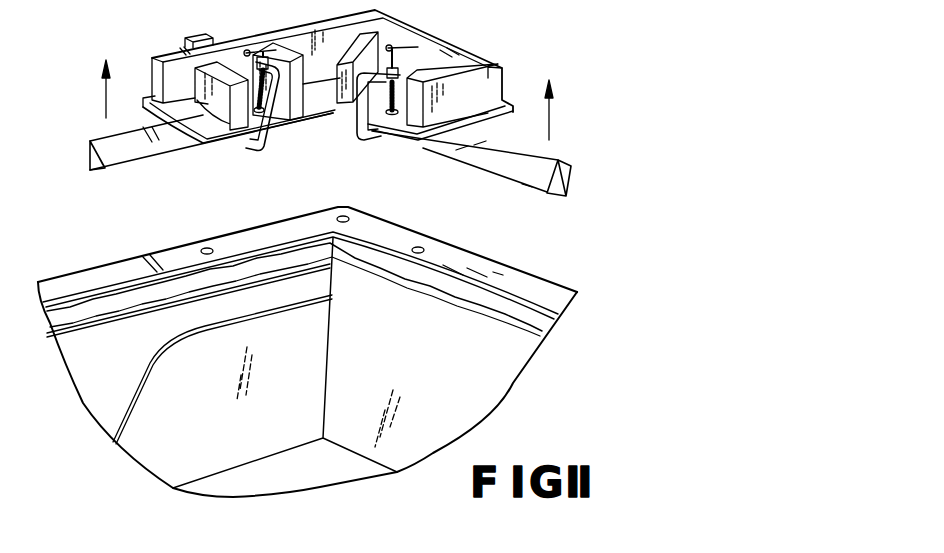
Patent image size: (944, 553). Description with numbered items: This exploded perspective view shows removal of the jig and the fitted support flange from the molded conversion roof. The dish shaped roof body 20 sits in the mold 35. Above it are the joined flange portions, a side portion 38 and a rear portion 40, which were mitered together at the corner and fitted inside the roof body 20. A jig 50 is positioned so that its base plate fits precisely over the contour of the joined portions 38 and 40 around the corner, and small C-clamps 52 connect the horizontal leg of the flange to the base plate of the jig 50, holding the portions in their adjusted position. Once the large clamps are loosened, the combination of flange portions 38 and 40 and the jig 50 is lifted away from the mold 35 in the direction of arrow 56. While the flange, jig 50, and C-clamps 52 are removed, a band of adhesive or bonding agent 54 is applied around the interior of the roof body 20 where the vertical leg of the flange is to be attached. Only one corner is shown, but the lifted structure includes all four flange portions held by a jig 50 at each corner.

The roof body 20 is at (502, 378).
The mold 35 is at (553, 293).
The side portion 38 is at (90, 142).
The rear portion 40 is at (569, 165).
The jig 50 is at (443, 43).
The small C-clamp 52 is at (256, 142).
The adhesive or bonding agent 54 is at (123, 308).
The arrow 56 is at (106, 91).